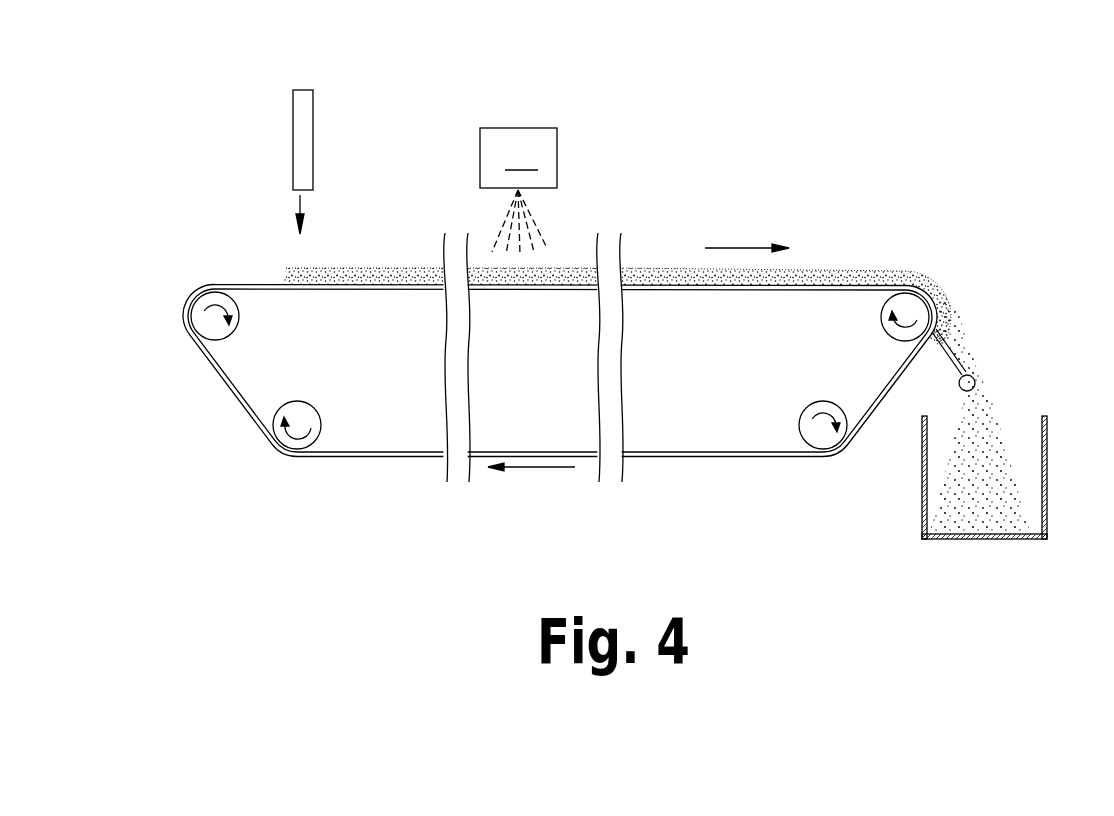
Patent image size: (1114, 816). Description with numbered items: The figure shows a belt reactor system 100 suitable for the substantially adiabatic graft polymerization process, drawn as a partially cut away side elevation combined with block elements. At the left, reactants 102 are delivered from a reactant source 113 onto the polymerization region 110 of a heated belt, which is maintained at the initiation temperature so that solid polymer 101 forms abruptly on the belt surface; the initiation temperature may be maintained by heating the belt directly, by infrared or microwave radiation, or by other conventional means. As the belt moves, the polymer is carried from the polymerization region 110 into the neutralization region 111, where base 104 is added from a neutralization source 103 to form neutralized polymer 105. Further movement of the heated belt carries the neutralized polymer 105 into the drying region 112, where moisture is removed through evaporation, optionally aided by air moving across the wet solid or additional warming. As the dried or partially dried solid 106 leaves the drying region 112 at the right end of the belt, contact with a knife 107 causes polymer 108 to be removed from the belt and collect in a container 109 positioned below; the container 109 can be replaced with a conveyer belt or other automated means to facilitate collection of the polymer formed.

The belt reactor system 100 is at (327, 522).
The solid polymer 101 is at (337, 268).
The reactants 102 is at (305, 209).
The neutralization source 103 is at (518, 158).
The base 104 is at (532, 218).
The neutralized polymer 105 is at (563, 267).
The dried or partially dried solid 106 is at (855, 270).
The knife 107 is at (958, 367).
The polymer 108 is at (975, 376).
The container 109 is at (995, 542).
The polymerization region 110 is at (399, 283).
The neutralization region 111 is at (502, 286).
The drying region 112 is at (770, 290).
The reactant source 113 is at (310, 141).